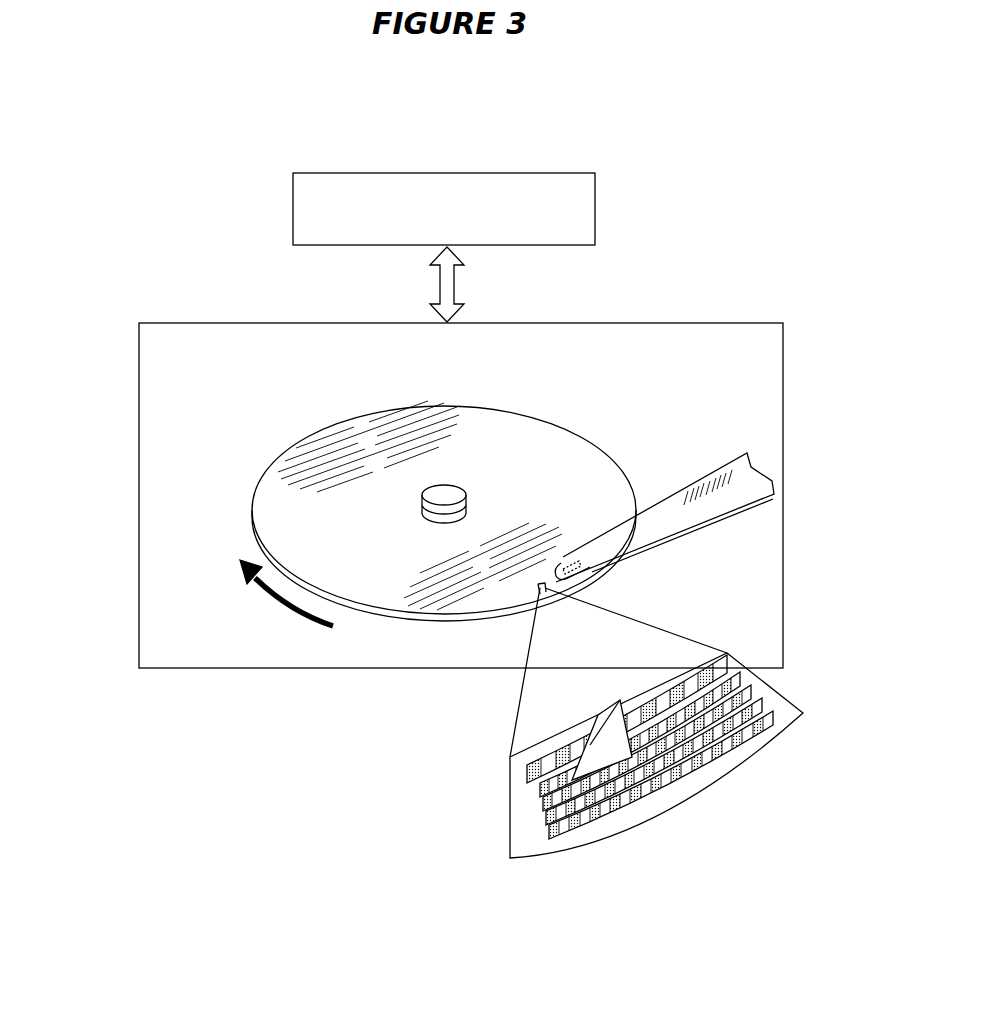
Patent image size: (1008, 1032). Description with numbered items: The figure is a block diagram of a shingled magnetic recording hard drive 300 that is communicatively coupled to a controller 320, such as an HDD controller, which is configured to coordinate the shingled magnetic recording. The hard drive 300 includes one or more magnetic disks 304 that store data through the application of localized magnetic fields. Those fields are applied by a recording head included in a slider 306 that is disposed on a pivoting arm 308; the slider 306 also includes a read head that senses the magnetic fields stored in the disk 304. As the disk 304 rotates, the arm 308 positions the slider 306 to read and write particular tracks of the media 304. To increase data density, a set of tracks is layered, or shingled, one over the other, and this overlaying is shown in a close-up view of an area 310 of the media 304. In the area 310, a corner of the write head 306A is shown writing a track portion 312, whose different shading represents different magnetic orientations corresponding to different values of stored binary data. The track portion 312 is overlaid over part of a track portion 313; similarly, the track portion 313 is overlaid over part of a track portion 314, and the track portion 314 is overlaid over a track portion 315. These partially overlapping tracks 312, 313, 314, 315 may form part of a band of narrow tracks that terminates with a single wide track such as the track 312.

The SMR hard drive 300 is at (139, 323).
The magnetic disk 304 is at (494, 425).
The slider 306 is at (568, 558).
The write head 306A is at (617, 707).
The pivoting arm 308 is at (730, 468).
The area 310 is at (552, 584).
The track portion 312 is at (737, 668).
The track portion 313 is at (752, 690).
The track portion 314 is at (762, 703).
The track portion 315 is at (773, 715).
The controller 320 is at (340, 173).